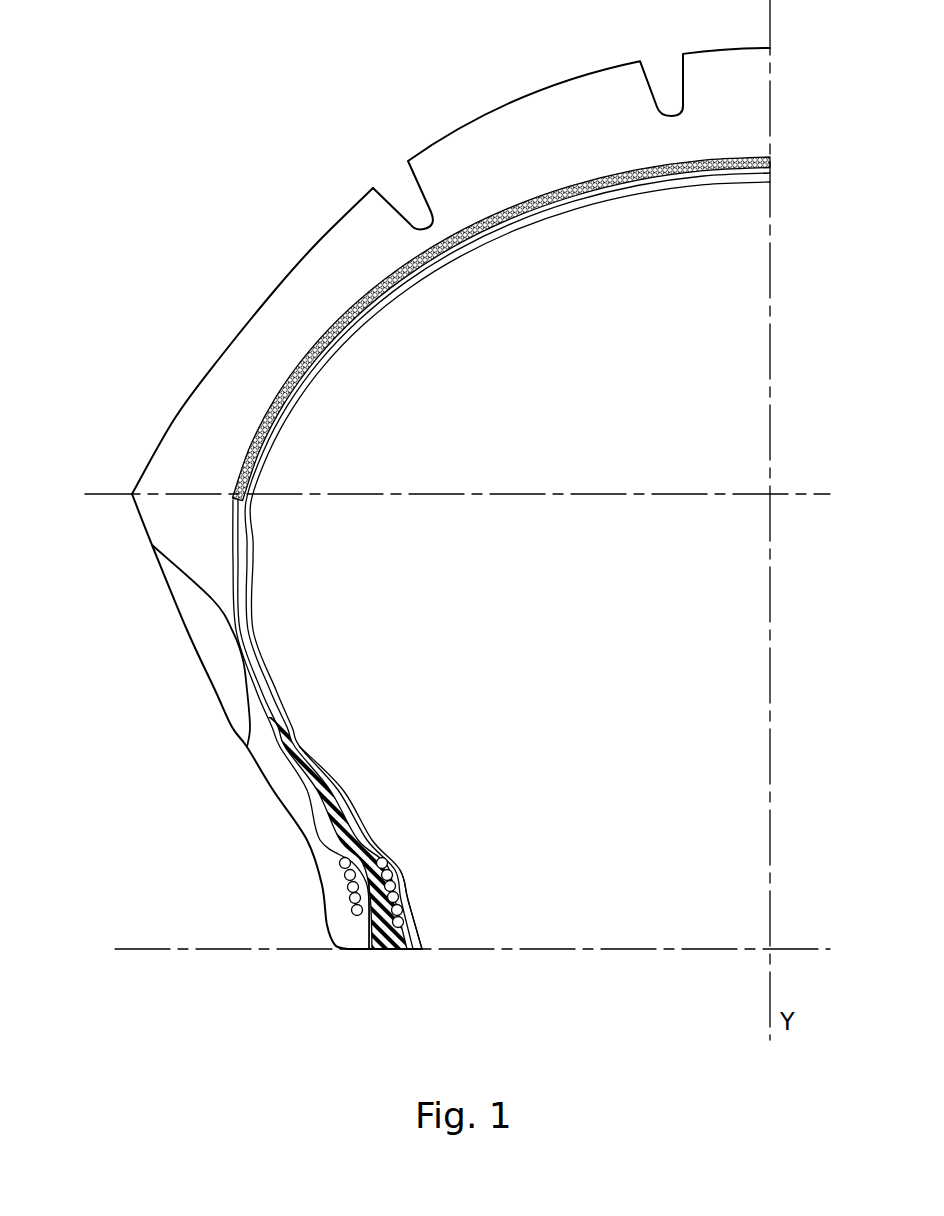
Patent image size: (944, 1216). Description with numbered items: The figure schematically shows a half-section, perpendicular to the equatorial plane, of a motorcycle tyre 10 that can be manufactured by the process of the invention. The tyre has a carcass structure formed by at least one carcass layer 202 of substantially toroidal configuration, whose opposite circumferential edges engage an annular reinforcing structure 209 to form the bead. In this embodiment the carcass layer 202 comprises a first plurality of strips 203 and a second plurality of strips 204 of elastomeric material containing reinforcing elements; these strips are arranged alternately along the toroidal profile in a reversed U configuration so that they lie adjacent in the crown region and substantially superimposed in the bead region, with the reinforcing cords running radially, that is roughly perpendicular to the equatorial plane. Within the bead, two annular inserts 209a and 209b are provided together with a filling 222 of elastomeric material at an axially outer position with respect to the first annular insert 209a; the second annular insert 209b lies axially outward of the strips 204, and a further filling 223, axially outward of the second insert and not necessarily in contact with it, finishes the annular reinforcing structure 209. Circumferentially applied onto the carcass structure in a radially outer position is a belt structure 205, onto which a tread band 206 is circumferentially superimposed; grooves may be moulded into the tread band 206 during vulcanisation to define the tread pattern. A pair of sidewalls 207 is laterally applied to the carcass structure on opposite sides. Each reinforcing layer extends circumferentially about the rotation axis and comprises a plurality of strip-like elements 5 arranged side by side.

The tyre 10 is at (296, 86).
The strip-like elements 5 is at (247, 448).
The belt structure 205 is at (602, 176).
The tread band 206 is at (530, 122).
The carcass layer 202 is at (249, 592).
The first plurality of strips 203 is at (343, 790).
The sidewalls 207 is at (200, 632).
The annular reinforcing structure 209 is at (416, 863).
The first annular insert 209a is at (407, 892).
The second annular insert 209b is at (322, 873).
The filling 222 is at (393, 940).
The further filling 223 is at (332, 910).
The second plurality of strips 204 is at (370, 927).